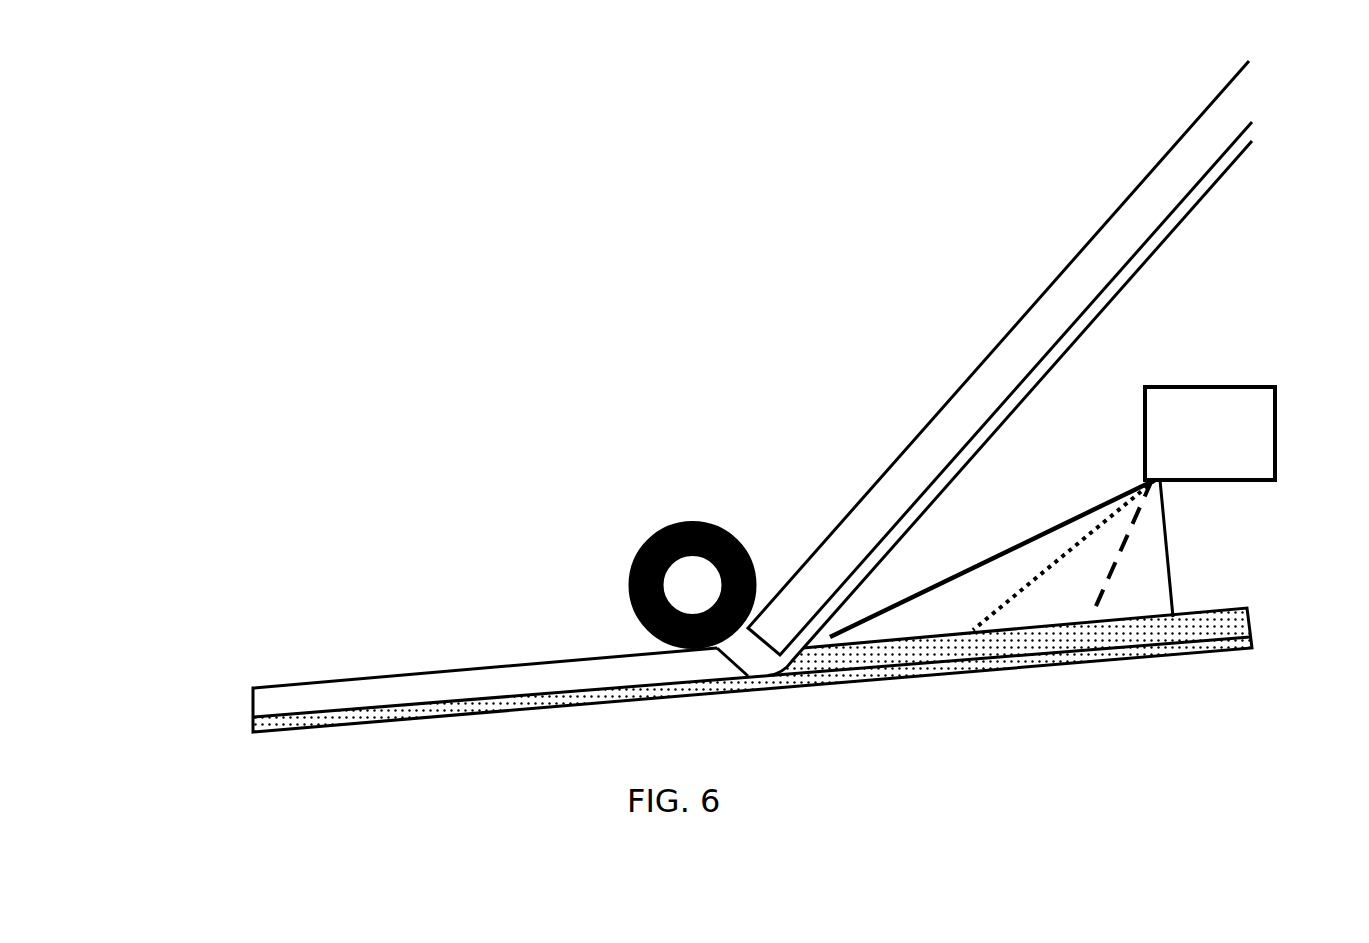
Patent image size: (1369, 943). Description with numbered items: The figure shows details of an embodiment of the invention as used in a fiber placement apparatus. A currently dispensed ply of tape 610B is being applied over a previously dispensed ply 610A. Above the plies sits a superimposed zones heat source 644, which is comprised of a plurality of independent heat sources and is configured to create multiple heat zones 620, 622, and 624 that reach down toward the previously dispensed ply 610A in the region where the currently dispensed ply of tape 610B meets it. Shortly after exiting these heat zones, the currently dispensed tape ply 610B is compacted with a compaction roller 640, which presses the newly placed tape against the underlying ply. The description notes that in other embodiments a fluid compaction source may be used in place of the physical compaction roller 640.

The previously dispensed ply 610A is at (1218, 622).
The currently dispensed ply of tape 610B is at (312, 683).
The heat zone 620 is at (1159, 600).
The heat zone 622 is at (1089, 599).
The heat zone 624 is at (964, 619).
The compaction roller 640 is at (643, 545).
The superimposed zones heat source 644 is at (1228, 410).